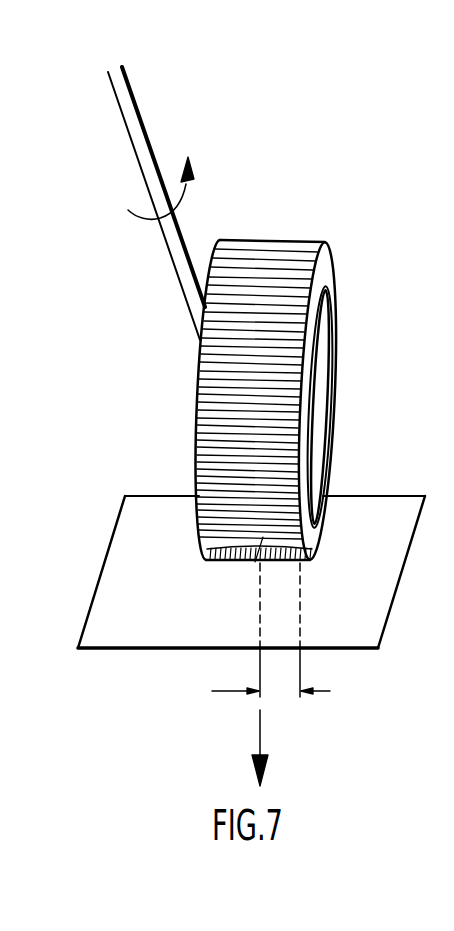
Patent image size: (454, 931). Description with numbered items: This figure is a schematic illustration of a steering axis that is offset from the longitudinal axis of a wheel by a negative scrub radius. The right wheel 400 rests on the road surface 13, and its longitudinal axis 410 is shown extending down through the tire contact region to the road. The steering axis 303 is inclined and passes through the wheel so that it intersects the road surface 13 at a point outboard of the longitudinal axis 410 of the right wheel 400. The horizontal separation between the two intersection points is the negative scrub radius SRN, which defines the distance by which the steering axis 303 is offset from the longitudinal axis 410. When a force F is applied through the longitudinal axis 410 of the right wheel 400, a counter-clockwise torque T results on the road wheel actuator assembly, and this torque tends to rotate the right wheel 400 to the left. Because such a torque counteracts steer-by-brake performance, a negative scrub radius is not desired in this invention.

The steering axis 303 is at (148, 129).
The right wheel 400 is at (337, 273).
The road surface 13 is at (374, 518).
The longitudinal axis 410 is at (259, 613).
The counter-clockwise torque T is at (187, 192).
The force F is at (262, 742).
The negative scrub radius SRN is at (280, 688).